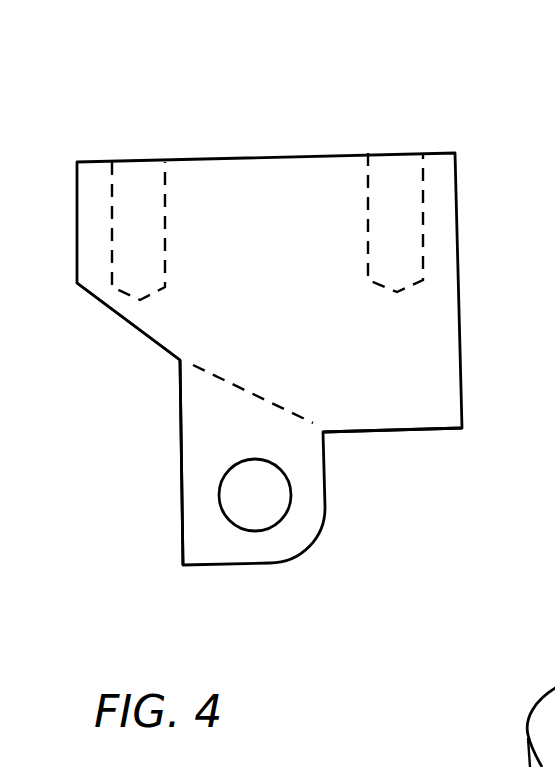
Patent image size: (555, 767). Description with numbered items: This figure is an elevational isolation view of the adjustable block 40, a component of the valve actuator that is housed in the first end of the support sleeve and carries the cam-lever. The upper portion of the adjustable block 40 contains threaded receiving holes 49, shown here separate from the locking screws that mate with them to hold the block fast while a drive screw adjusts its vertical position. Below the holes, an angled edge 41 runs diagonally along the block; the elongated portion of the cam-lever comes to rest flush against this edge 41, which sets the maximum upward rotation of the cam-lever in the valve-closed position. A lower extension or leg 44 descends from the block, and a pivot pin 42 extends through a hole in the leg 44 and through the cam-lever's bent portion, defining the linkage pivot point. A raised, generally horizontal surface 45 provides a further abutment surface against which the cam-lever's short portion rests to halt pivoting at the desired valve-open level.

The adjustable block 40 is at (276, 126).
The threaded receiving holes 49 is at (114, 165).
The angled edge 41 is at (113, 315).
The legs 44 is at (205, 457).
The raised horizontal surface 45 is at (437, 430).
The pivot pin 42 is at (264, 508).